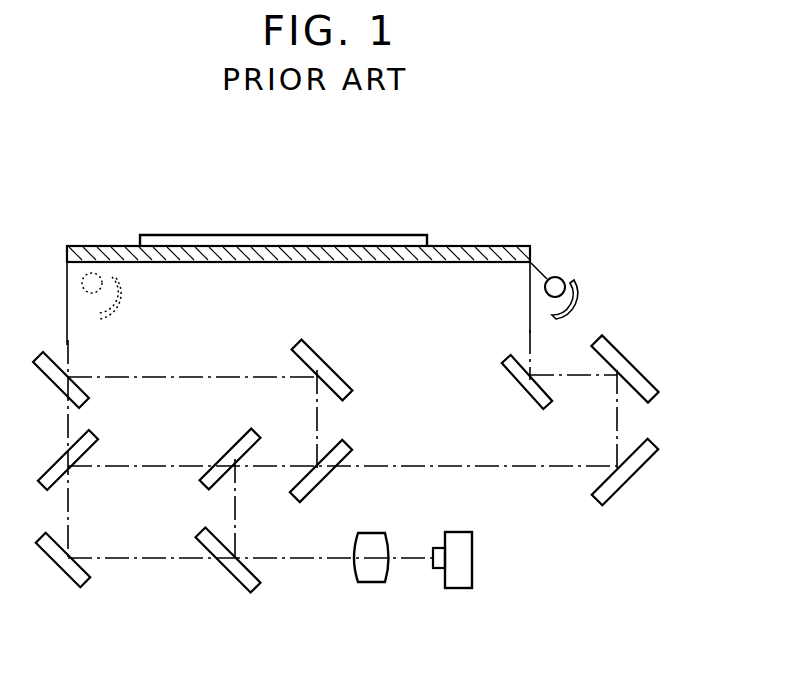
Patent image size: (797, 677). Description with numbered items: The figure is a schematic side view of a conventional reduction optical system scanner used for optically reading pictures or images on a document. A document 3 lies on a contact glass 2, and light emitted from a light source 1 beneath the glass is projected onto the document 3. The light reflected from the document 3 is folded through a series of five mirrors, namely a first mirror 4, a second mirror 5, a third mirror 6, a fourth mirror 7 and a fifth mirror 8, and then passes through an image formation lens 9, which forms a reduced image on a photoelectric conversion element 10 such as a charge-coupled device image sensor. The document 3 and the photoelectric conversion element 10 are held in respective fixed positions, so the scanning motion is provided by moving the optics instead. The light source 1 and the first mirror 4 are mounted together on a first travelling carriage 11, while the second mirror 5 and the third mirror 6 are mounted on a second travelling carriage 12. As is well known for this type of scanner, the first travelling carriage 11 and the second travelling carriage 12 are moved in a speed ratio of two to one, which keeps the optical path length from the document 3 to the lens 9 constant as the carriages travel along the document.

The light source 1 is at (548, 281).
The contact glass 2 is at (450, 257).
The document 3 is at (298, 250).
The first mirror 4 is at (510, 358).
The second mirror 5 is at (633, 363).
The third mirror 6 is at (651, 462).
The fourth mirror 7 is at (233, 440).
The fifth mirror 8 is at (236, 574).
The image formation lens 9 is at (368, 575).
The photoelectric conversion element 10 is at (473, 566).
The first travelling carriage 11 is at (501, 386).
The second travelling carriage 12 is at (657, 441).